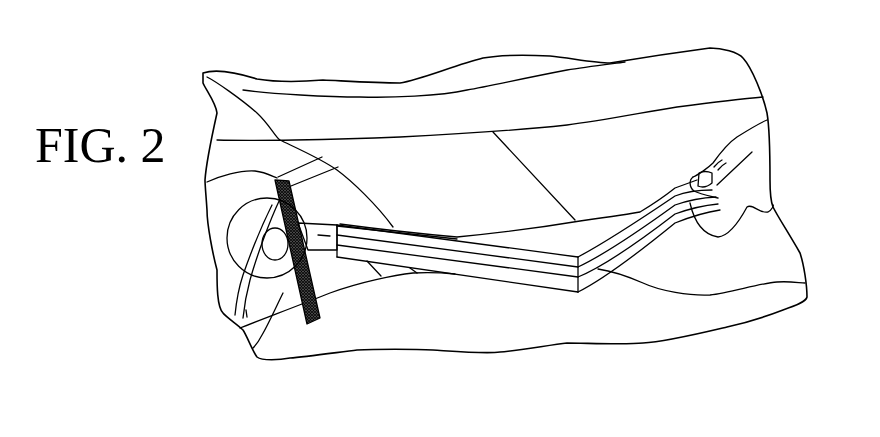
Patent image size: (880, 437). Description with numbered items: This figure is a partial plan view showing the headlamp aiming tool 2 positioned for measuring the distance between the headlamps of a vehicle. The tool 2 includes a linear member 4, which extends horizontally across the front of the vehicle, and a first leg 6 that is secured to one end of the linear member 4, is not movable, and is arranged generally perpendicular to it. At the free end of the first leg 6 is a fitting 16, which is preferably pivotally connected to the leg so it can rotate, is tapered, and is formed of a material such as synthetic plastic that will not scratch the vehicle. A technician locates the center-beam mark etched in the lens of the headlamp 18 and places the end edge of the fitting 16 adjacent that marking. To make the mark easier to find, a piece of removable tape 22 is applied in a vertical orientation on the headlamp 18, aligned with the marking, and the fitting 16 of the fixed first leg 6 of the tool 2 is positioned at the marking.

The headlamp aiming tool 2 is at (603, 283).
The linear member 4 is at (678, 222).
The first leg 6 is at (472, 273).
The fitting 16 is at (320, 238).
The headlamp 18 is at (228, 232).
The removable tape 22 is at (253, 348).